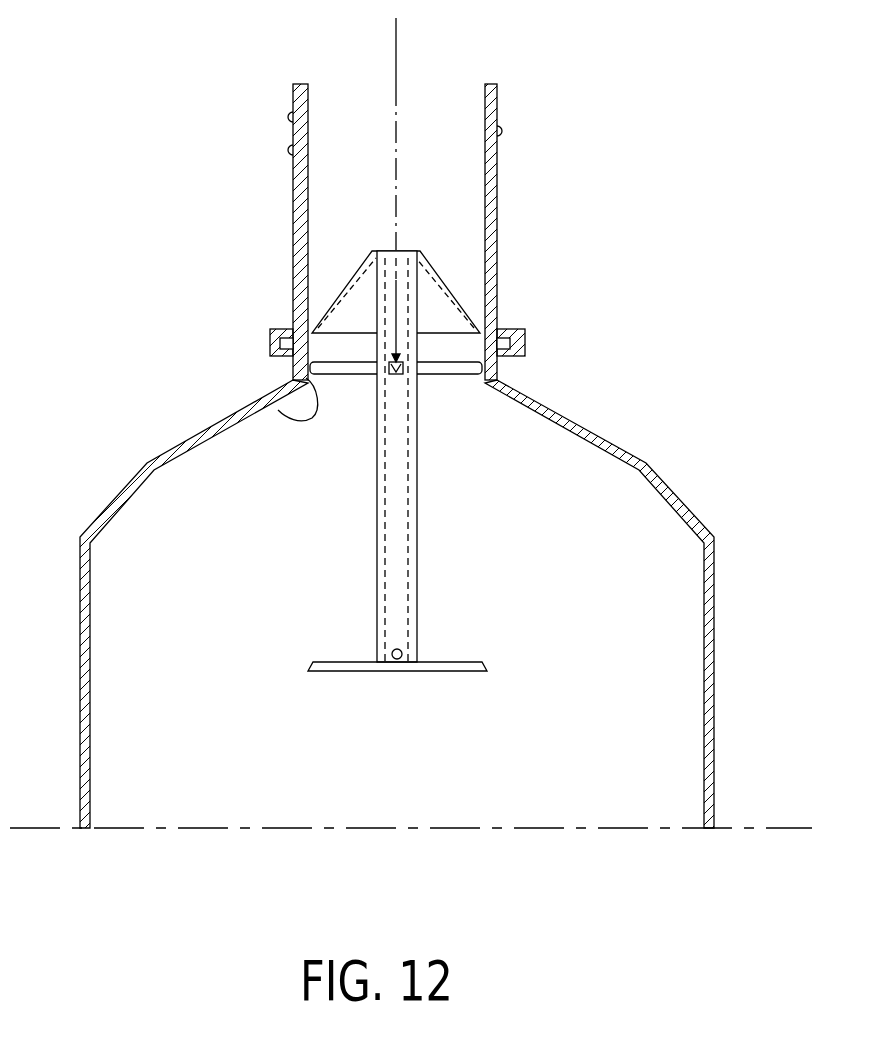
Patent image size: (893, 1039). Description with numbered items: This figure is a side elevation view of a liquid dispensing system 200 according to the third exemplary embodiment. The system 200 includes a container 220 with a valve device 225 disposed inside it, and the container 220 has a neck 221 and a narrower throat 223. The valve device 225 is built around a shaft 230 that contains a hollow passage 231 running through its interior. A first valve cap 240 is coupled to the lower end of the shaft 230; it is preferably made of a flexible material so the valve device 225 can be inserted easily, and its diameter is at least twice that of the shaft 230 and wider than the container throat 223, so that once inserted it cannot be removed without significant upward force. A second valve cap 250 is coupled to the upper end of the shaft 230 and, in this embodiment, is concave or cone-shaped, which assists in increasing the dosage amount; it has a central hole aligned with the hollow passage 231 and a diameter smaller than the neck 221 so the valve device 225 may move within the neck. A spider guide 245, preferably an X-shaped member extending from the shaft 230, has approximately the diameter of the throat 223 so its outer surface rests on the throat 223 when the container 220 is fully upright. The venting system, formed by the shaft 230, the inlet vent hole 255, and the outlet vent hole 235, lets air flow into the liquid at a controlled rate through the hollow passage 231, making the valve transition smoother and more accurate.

The liquid dispensing system 200 is at (622, 262).
The container 220 is at (458, 604).
The container neck 221 is at (497, 220).
The container throat 223 is at (300, 406).
The valve device 225 is at (418, 489).
The shaft 230 is at (377, 528).
The hollow passage 231 is at (400, 553).
The outlet vent hole 235 is at (402, 650).
The first valve cap 240 is at (348, 672).
The spider guide 245 is at (443, 377).
The second valve cap 250 is at (343, 293).
The inlet vent hole 255 is at (396, 251).